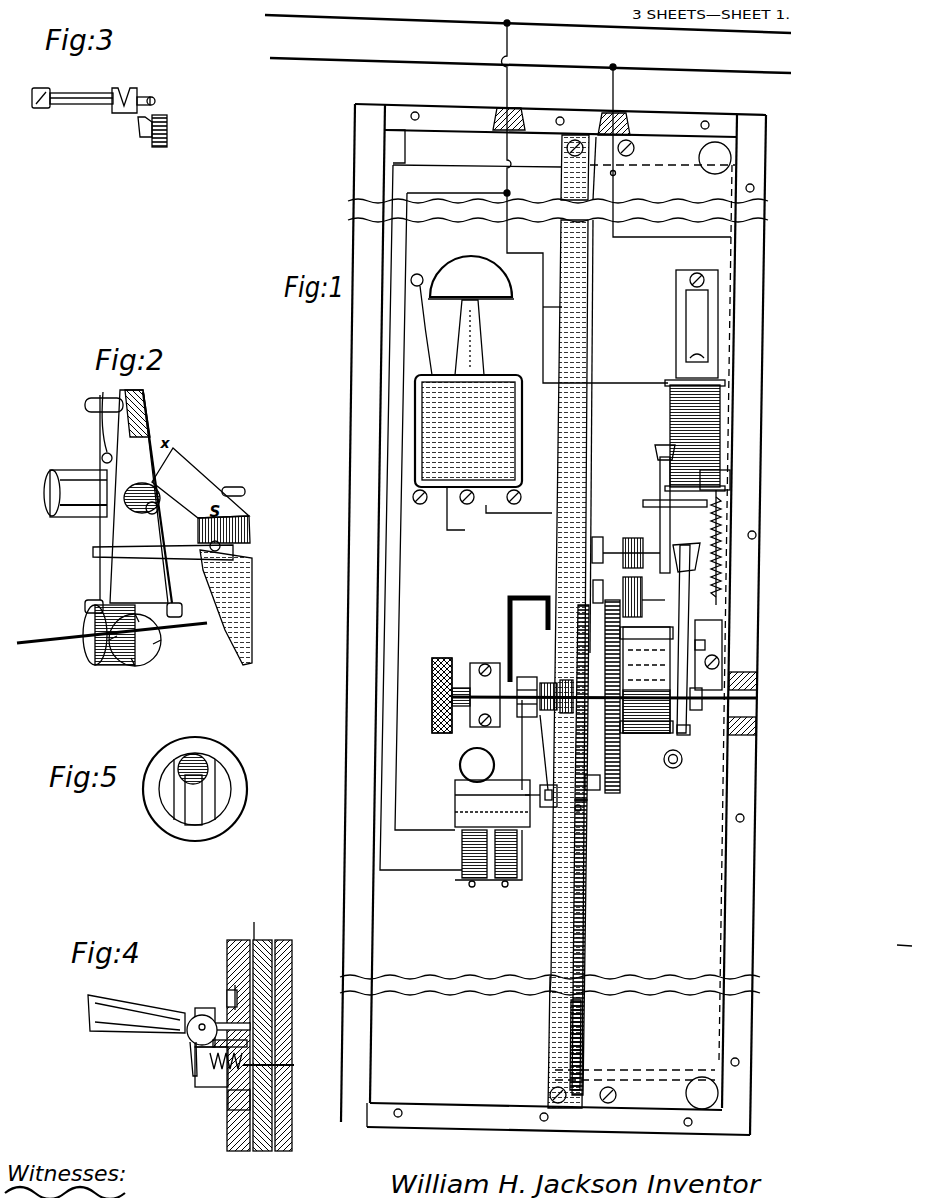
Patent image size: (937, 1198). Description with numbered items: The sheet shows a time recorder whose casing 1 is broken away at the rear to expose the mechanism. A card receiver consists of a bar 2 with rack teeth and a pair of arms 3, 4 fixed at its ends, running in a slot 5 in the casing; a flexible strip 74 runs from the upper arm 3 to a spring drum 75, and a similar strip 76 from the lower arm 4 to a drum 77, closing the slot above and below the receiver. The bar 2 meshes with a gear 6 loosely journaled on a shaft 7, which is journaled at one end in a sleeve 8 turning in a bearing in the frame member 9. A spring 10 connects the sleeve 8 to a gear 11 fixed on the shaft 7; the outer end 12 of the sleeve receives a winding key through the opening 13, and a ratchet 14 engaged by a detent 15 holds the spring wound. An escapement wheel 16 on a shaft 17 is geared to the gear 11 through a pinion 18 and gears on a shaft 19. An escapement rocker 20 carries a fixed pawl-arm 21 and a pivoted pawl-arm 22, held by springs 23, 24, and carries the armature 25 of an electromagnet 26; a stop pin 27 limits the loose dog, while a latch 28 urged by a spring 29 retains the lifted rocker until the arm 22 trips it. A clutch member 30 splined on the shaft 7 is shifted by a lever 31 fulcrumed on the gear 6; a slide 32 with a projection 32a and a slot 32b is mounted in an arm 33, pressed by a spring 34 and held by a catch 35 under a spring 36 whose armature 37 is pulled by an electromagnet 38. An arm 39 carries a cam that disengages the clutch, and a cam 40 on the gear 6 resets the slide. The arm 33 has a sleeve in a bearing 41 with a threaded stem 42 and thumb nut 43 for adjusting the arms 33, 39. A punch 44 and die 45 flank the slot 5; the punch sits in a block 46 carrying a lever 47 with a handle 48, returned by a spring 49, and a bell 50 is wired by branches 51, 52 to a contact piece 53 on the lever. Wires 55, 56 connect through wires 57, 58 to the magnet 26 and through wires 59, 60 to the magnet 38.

In FIG. 1, the casing 1 is at (350, 703).
In FIG. 4, the casing 1 is at (240, 1150).
In FIG. 1, the bar 2 is at (576, 900).
In FIG. 1, the arm 3 is at (690, 640).
In FIG. 1, the arm 4 is at (664, 1070).
In FIG. 4, the slot 5 is at (276, 991).
In FIG. 1, the gear 6 is at (577, 641).
In FIG. 3, the gear 6 is at (167, 127).
In FIG. 1, the shaft 7 is at (524, 680).
In FIG. 1, the sleeve 8 is at (682, 735).
In FIG. 1, the frame member 9 is at (690, 620).
In FIG. 1, the spring 10 is at (656, 735).
In FIG. 1, the gear 11 is at (614, 795).
In FIG. 1, the outer end of sleeve 12 is at (745, 699).
In FIG. 1, the opening 13 is at (746, 728).
In FIG. 1, the ratchet 14 is at (693, 712).
In FIG. 1, the detent 15 is at (724, 665).
In FIG. 1, the escapement wheel 16 is at (722, 561).
In FIG. 2, the escapement wheel 16 is at (144, 656).
In FIG. 1, the shaft 17 is at (626, 538).
In FIG. 2, the shaft 17 is at (50, 645).
In FIG. 1, the pinion 18 is at (632, 540).
In FIG. 1, the shaft 19 is at (644, 601).
In FIG. 1, the escapement rocker 20 is at (660, 471).
In FIG. 2, the escapement rocker 20 is at (140, 452).
In FIG. 1, the fixed pawl-arm 21 is at (725, 513).
In FIG. 2, the fixed pawl-arm 21 is at (170, 590).
In FIG. 1, the pivoted pawl-arm 22 is at (645, 503).
In FIG. 2, the pivoted pawl-arm 22 is at (100, 569).
In FIG. 1, the spring 23 is at (722, 531).
In FIG. 2, the spring 24 is at (103, 441).
In FIG. 2, the armature 25 is at (222, 542).
In FIG. 1, the electromagnet 26 is at (705, 432).
In FIG. 2, the stop pin 27 is at (105, 396).
In FIG. 1, the latch 28 is at (750, 474).
In FIG. 2, the latch 28 is at (140, 550).
In FIG. 2, the spring 29 is at (240, 560).
In FIG. 1, the clutch member 30 is at (553, 683).
In FIG. 1, the lever 31 is at (542, 730).
In FIG. 1, the slide 32 is at (548, 808).
In FIG. 3, the slide 32 is at (86, 105).
In FIG. 1, the projection 32a is at (581, 811).
In FIG. 3, the projection 32a is at (153, 99).
In FIG. 3, the slot 32b is at (125, 93).
In FIG. 1, the arm 33 is at (521, 760).
In FIG. 1, the spring 34 is at (460, 766).
In FIG. 1, the catch 35 is at (455, 813).
In FIG. 1, the spring 36 is at (526, 850).
In FIG. 1, the armature 37 is at (462, 841).
In FIG. 1, the electromagnet 38 is at (472, 870).
In FIG. 1, the arm 39 is at (507, 597).
In FIG. 1, the cam 40 is at (585, 787).
In FIG. 3, the cam 40 is at (142, 132).
In FIG. 1, the bearing 41 is at (482, 663).
In FIG. 1, the threaded stem 42 is at (436, 700).
In FIG. 1, the thumb nut 43 is at (440, 658).
In FIG. 5, the punch 44 is at (193, 808).
In FIG. 4, the punch 44 is at (212, 1068).
In FIG. 1, the die 45 is at (677, 768).
In FIG. 4, the die 45 is at (294, 1065).
In FIG. 5, the block 46 is at (238, 822).
In FIG. 4, the block 46 is at (230, 1100).
In FIG. 4, the punch operating lever 47 is at (190, 1050).
In FIG. 5, the handle 48 is at (206, 764).
In FIG. 4, the handle 48 is at (111, 1026).
In FIG. 4, the spring 49 is at (222, 1075).
In FIG. 1, the electric bell 50 is at (490, 395).
In FIG. 1, the branch of circuit 51 is at (523, 516).
In FIG. 1, the branch of circuit 52 is at (487, 520).
In FIG. 4, the branch of circuit 52 is at (227, 998).
In FIG. 4, the contact piece 53 is at (250, 1027).
In FIG. 1, the wire 55 is at (314, 20).
In FIG. 1, the wire 56 is at (360, 62).
In FIG. 1, the wire 57 is at (589, 300).
In FIG. 1, the wire 58 is at (652, 239).
In FIG. 1, the wire 59 is at (384, 576).
In FIG. 1, the wire 60 is at (399, 574).
In FIG. 1, the flexible strip 74 is at (724, 282).
In FIG. 1, the spring drum 75 is at (722, 160).
In FIG. 1, the flexible strip 76 is at (715, 1088).
In FIG. 1, the drum 77 is at (705, 1106).